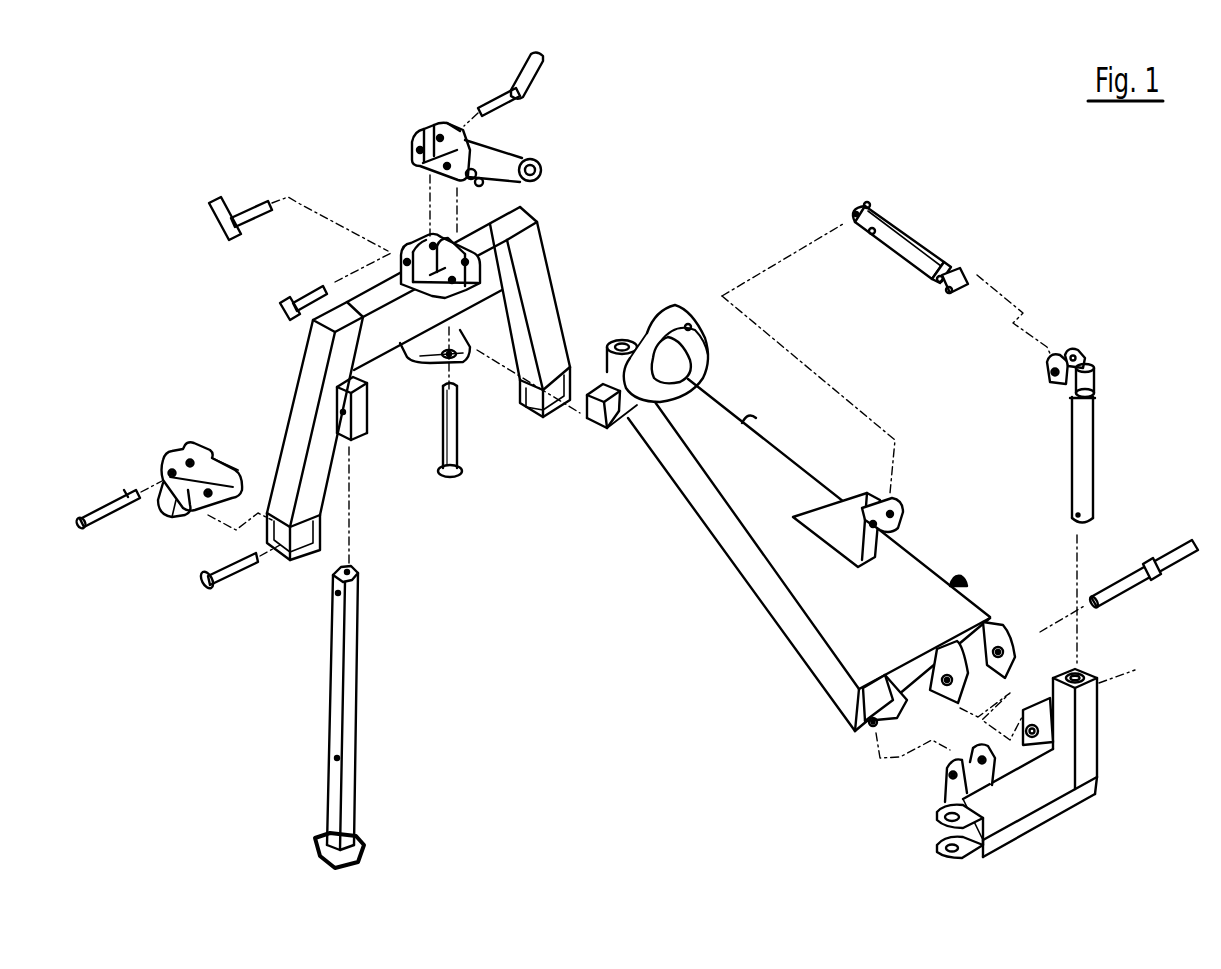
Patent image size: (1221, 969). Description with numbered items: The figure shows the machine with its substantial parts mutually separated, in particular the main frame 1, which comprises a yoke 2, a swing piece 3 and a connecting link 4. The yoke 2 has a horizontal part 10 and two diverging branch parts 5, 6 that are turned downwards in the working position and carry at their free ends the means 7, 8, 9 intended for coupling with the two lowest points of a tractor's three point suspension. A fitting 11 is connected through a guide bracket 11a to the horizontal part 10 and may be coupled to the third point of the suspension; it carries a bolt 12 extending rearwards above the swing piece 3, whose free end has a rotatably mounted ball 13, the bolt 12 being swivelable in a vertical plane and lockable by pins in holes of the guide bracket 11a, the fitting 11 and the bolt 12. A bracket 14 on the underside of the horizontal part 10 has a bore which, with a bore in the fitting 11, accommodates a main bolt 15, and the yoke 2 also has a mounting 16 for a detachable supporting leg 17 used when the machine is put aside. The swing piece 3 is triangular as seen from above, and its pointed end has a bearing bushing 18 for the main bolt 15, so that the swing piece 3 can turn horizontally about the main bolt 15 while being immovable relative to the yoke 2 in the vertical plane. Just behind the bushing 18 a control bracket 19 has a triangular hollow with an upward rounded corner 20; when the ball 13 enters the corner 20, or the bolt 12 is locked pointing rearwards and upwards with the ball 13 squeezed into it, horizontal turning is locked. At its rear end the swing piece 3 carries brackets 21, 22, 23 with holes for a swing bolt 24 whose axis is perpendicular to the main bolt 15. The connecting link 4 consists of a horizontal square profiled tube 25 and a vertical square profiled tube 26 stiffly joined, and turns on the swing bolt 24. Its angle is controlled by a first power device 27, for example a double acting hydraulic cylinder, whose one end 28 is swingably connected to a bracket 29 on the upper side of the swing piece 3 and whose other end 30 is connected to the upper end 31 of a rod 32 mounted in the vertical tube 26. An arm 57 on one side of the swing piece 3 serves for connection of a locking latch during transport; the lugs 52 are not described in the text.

The main frame 1 is at (716, 168).
The yoke 2 is at (310, 362).
The swing piece 3 is at (787, 543).
The connecting link 4 is at (1047, 784).
The branch part 5 is at (300, 423).
The branch part 6 is at (543, 306).
The coupling means 7 is at (228, 566).
The coupling means 8 is at (170, 500).
The coupling means 9 is at (117, 508).
The horizontal part 10 is at (537, 219).
The fitting 11 is at (420, 163).
The guide bracket 11a is at (407, 246).
The bolt 12 is at (513, 153).
The ball 13 is at (541, 164).
The bracket 14 is at (460, 363).
The main bolt 15 is at (452, 478).
The mounting 16 is at (355, 442).
The supporting leg 17 is at (337, 674).
The bearing bushing 18 is at (628, 338).
The control bracket 19 is at (642, 438).
The rounded corner 20 is at (670, 310).
The bracket 21 is at (887, 718).
The bracket 22 is at (948, 713).
The bracket 23 is at (993, 634).
The swing bolt 24 is at (1143, 578).
The square profiled tube 25 is at (1012, 788).
The square profiled tube 26 is at (1091, 722).
The first power device 27 is at (923, 257).
The end of first power device 28 is at (866, 202).
The bracket 29 is at (884, 495).
The end of first power device 30 is at (961, 273).
The upper end of rod 31 is at (1093, 378).
The rod 32 is at (1086, 433).
The lugs 52 is at (940, 817).
The arm 57 is at (966, 580).